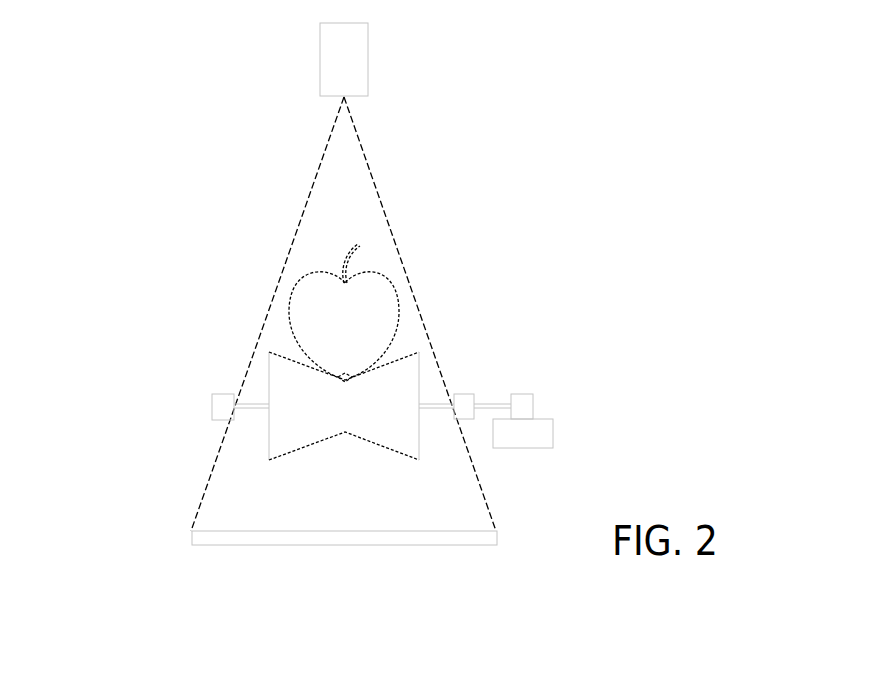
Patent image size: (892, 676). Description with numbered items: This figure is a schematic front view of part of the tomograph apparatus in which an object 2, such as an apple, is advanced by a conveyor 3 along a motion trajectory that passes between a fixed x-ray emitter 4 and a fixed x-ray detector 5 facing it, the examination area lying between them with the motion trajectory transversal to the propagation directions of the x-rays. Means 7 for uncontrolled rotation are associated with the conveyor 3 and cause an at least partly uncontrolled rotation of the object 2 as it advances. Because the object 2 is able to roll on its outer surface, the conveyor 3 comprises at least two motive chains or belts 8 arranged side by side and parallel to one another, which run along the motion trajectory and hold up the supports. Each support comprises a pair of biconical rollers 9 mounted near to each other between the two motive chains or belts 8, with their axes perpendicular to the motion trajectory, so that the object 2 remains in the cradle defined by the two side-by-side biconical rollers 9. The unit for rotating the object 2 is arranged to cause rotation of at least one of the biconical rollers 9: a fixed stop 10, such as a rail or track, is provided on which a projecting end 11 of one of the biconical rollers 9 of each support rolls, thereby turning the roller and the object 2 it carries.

The object 2 is at (355, 318).
The conveyor 3 is at (348, 384).
The x-ray emitter 4 is at (340, 54).
The x-ray detector 5 is at (472, 537).
The means for uncontrolled rotation 7 is at (245, 455).
The motive chains or belts 8 is at (220, 405).
The biconical rollers 9 is at (376, 420).
The fixed stop 10 is at (517, 433).
The projecting end 11 is at (520, 403).